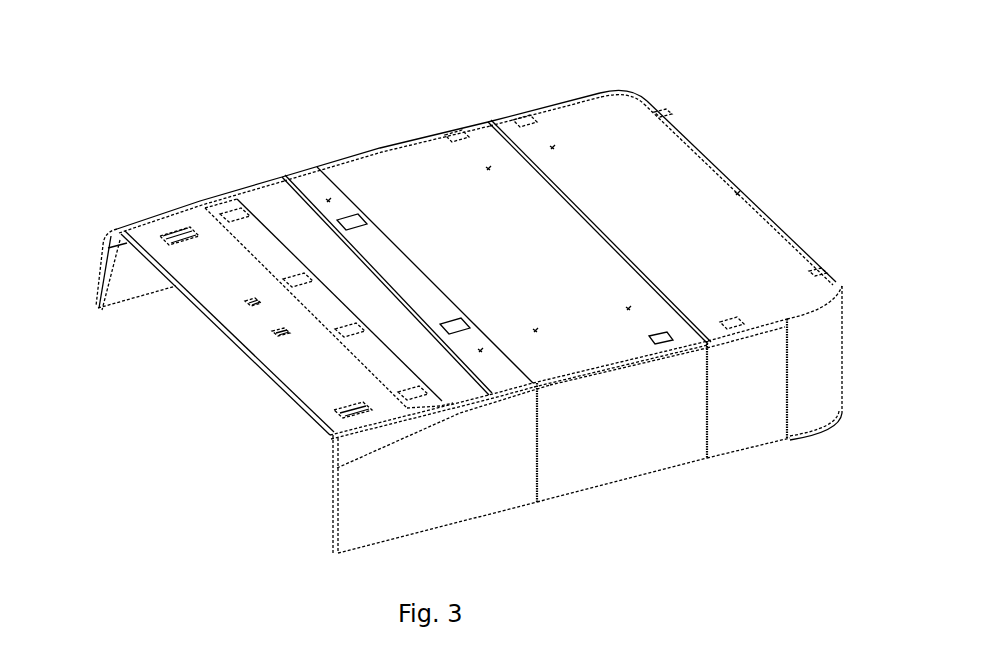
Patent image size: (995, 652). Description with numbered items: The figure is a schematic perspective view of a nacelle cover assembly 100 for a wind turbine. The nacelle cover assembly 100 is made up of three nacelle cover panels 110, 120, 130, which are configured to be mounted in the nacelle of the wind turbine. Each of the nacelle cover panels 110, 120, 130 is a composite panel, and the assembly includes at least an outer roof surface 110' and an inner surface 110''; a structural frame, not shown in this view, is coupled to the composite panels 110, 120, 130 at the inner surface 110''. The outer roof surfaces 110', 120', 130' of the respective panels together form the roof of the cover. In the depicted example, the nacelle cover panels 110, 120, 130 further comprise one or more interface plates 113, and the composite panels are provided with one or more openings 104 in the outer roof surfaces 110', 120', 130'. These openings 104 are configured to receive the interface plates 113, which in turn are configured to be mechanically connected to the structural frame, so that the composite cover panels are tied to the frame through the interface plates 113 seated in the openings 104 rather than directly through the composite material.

The nacelle cover assembly 100 is at (129, 146).
The nacelle cover panel 110 is at (304, 324).
The outer roof surface 110' is at (388, 468).
The inner surface 110'' is at (91, 299).
The nacelle cover panel 120 is at (496, 228).
The outer roof surface 120' is at (622, 421).
The nacelle cover panel 130 is at (662, 190).
The outer roof surface 130' is at (814, 344).
The interface plate 113 is at (236, 215).
The opening 104 is at (357, 217).